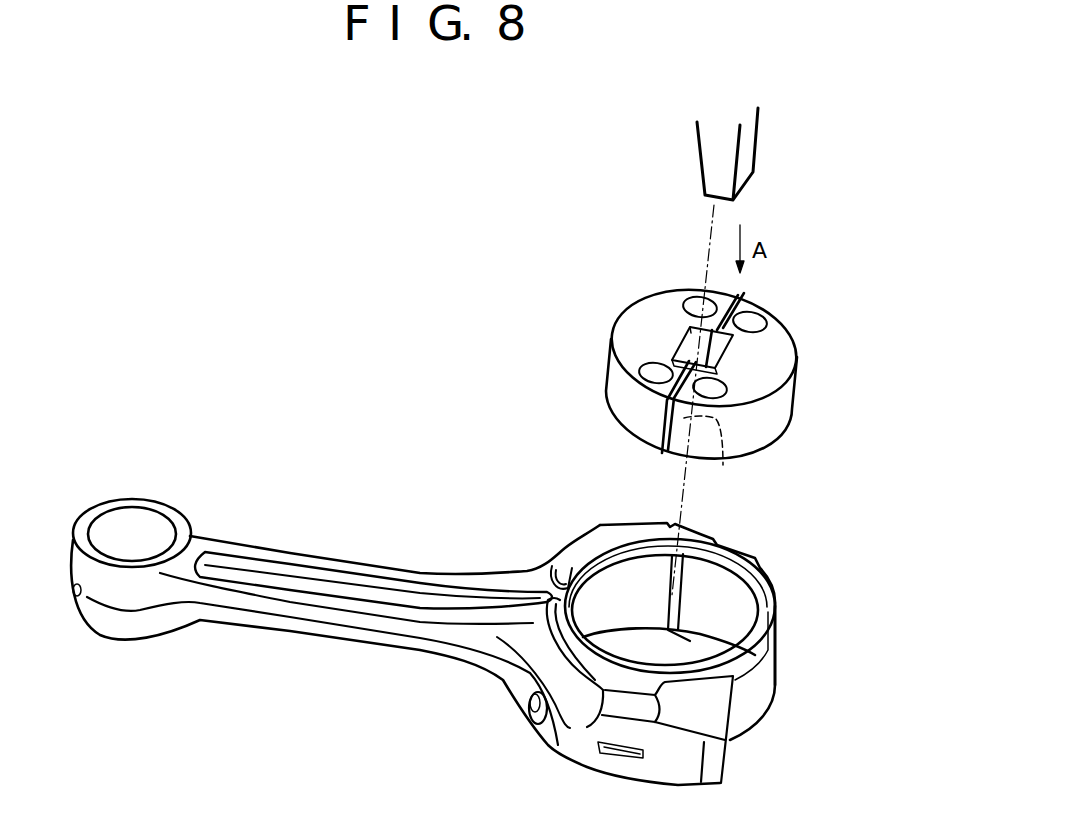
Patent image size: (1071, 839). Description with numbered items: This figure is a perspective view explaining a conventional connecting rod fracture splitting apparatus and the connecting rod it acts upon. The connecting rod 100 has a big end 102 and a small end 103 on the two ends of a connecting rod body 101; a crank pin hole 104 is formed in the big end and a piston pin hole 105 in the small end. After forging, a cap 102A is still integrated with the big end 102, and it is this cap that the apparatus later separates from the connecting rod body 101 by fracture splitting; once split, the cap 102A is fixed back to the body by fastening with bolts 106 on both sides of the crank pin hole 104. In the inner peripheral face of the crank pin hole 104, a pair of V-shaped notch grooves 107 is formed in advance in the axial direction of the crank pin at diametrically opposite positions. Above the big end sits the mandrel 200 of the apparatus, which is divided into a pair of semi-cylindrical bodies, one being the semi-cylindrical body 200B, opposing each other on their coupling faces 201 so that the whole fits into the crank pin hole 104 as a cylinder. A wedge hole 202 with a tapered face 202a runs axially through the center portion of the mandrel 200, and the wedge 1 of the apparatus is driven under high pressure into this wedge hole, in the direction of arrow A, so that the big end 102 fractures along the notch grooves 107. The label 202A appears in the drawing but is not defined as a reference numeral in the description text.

The wedge 1 is at (748, 148).
The connecting rod 100 is at (322, 518).
The connecting rod body 101 is at (403, 572).
The big end 102 is at (587, 717).
The cap 102A is at (778, 610).
The small end 103 is at (127, 502).
The crank pin hole 104 is at (727, 607).
The piston pin hole 105 is at (157, 527).
The bolts 106 is at (527, 708).
The V-shaped notch grooves 107 is at (672, 600).
The mandrel 200 is at (812, 311).
The semi-cylindrical body 200B is at (636, 331).
The coupling faces 201 is at (727, 467).
The wedge hole 202 is at (681, 351).
The tapered face 202a is at (688, 325).
The slit 202A is at (778, 352).